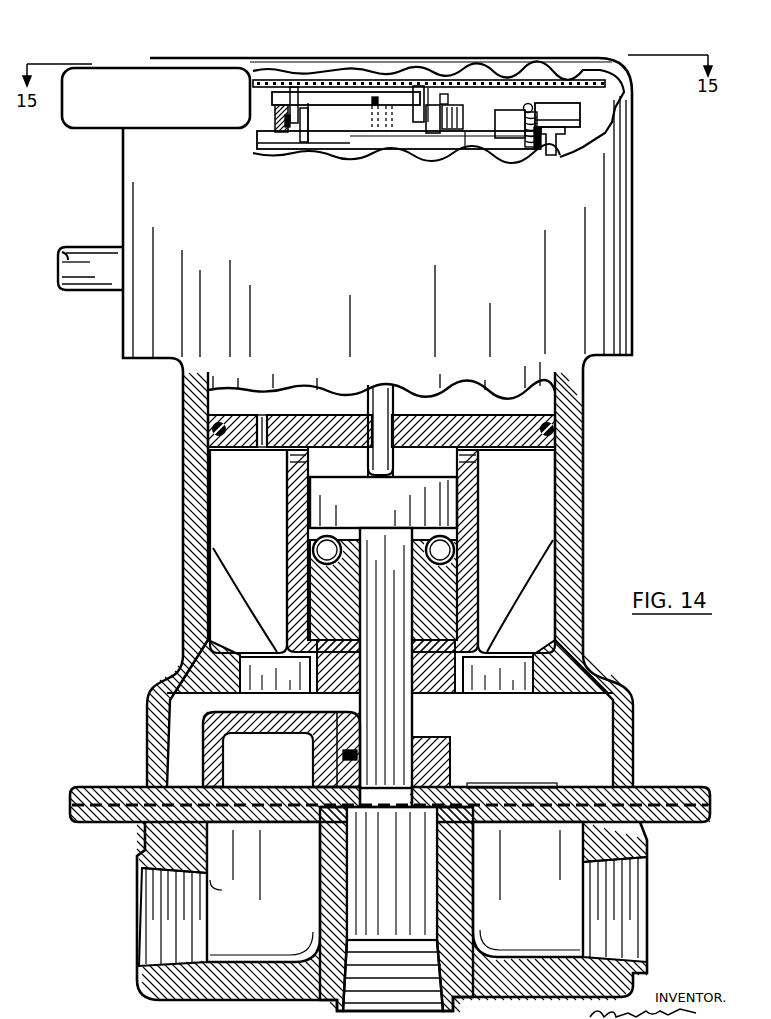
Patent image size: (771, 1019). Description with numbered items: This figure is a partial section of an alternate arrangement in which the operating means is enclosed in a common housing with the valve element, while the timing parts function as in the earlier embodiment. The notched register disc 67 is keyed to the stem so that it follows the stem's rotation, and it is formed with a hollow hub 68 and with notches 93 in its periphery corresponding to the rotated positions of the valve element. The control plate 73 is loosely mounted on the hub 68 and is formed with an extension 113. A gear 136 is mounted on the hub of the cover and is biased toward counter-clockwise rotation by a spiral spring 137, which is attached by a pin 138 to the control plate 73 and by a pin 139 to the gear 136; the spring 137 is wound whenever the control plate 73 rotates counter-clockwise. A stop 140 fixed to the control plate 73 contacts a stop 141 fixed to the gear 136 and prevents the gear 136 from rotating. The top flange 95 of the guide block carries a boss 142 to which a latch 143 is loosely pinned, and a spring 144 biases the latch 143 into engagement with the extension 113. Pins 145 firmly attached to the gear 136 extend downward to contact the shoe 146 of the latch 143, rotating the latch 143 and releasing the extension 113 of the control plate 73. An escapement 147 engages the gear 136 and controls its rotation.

The gear 136 is at (522, 79).
The spiral spring 137 is at (364, 149).
The pin 138 is at (447, 97).
The pin 139 is at (276, 99).
The stop 140 is at (432, 108).
The stop 141 is at (418, 86).
The boss 142 is at (554, 147).
The latch 143 is at (539, 150).
The spring 144 is at (524, 106).
The pins 145 is at (293, 88).
The shoe 146 is at (553, 112).
The escapement 147 is at (184, 107).
The hollow hub 68 is at (371, 96).
The control plate 73 is at (408, 149).
The notches 93 is at (440, 133).
The top flange 95 is at (470, 149).
The notched register disc 67 is at (502, 143).
The extension 113 is at (308, 123).